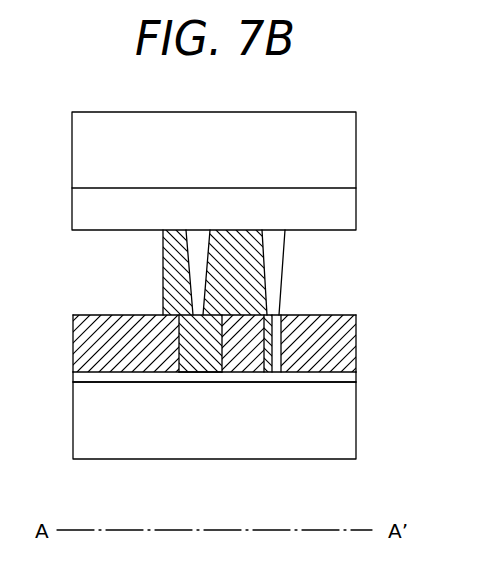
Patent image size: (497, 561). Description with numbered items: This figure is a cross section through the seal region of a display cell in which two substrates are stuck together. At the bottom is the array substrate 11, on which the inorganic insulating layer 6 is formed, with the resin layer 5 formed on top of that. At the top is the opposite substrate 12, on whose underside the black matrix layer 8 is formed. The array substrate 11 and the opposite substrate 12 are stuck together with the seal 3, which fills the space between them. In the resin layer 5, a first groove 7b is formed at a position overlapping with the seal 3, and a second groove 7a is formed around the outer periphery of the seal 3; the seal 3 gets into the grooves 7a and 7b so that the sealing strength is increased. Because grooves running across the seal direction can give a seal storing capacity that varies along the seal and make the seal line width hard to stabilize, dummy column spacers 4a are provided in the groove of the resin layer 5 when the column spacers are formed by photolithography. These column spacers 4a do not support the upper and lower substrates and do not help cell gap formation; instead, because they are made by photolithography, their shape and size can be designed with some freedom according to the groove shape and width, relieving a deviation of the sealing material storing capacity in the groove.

The opposite substrate 12 is at (363, 112).
The black matrix layer 8 is at (84, 208).
The seal 3 is at (163, 271).
The dummy column spacers 4a is at (200, 262).
The resin layer 5 is at (327, 315).
The inorganic insulating layer 6 is at (80, 377).
The second groove 7a is at (270, 372).
The first groove 7b is at (200, 372).
The array substrate 11 is at (363, 315).